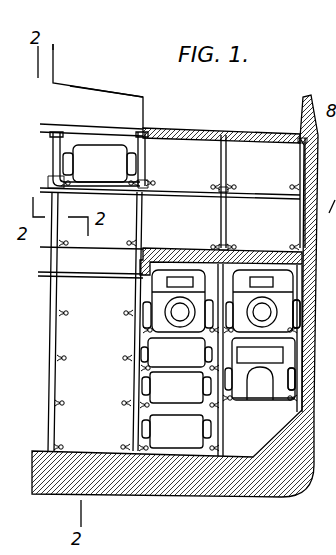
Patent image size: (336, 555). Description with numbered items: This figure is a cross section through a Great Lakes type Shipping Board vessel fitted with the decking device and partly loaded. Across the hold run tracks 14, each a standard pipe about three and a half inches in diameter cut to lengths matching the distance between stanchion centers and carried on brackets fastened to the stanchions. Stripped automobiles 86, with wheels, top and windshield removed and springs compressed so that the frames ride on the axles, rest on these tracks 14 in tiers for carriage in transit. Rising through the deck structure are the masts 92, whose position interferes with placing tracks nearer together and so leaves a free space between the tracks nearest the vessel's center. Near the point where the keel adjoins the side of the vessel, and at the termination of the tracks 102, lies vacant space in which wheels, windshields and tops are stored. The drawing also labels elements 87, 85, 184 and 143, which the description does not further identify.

The masts 92 is at (52, 43).
The deck beam 87 is at (78, 117).
The pipe bracket fitting 85 is at (143, 182).
The stripped automobiles 86 is at (99, 163).
The hull bottom 184 is at (156, 525).
The termination of the tracks 102 is at (252, 435).
The track 14 is at (314, 308).
The side support 143 is at (312, 365).